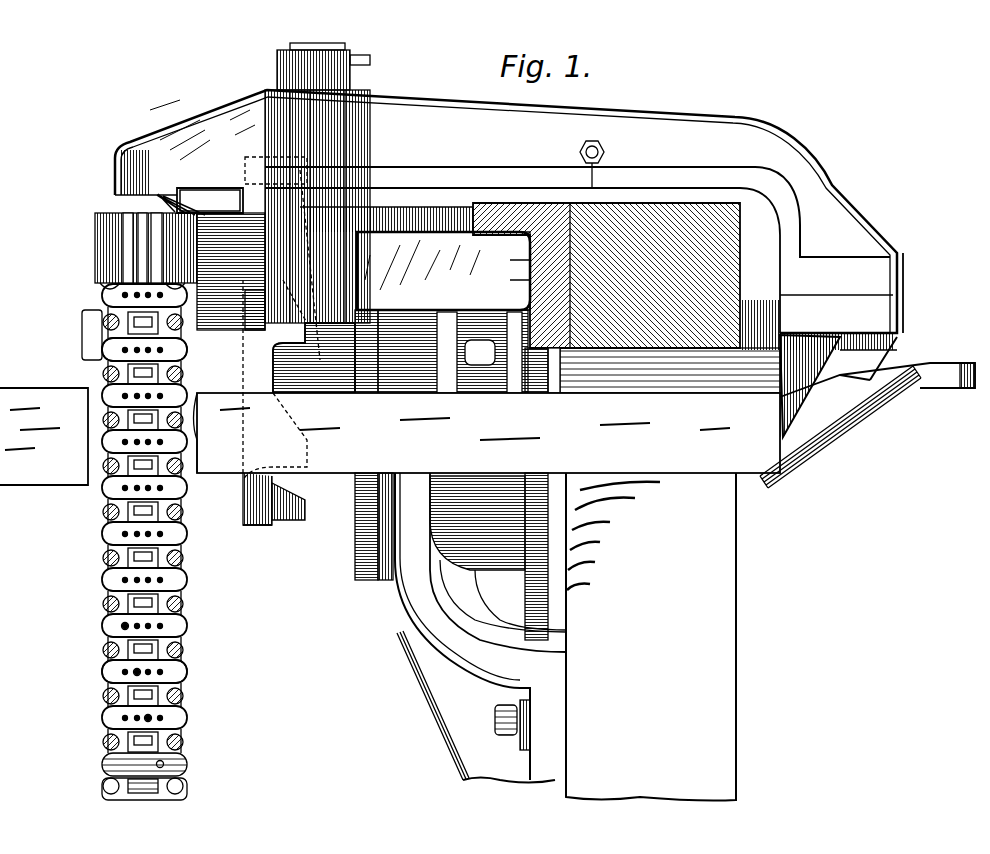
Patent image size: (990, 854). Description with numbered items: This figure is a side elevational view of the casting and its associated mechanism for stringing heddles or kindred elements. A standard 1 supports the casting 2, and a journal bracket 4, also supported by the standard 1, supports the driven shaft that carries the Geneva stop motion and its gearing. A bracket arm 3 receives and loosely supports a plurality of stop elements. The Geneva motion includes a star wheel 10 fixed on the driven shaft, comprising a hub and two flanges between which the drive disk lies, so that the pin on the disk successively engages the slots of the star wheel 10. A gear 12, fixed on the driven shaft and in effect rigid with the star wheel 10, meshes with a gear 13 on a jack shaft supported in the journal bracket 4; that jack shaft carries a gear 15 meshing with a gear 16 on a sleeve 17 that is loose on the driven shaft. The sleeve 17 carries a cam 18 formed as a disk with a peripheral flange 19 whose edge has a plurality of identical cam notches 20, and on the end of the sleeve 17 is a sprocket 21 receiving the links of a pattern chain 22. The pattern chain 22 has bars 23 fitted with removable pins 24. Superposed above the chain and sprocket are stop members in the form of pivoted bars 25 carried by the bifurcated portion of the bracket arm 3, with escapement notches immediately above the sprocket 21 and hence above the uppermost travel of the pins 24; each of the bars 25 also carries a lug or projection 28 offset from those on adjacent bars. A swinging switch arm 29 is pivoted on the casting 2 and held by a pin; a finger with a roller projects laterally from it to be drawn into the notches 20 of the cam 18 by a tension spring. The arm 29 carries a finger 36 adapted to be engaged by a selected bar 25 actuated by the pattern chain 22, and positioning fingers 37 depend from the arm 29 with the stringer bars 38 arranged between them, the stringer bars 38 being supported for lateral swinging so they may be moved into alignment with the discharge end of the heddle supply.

The standard 1 is at (718, 620).
The casting 2 is at (728, 272).
The bracket arm 3 is at (228, 212).
The journal bracket 4 is at (425, 690).
The star wheel 10 is at (512, 382).
The gear 12 is at (540, 394).
The gear 13 is at (532, 612).
The gear 15 is at (365, 600).
The gear 16 is at (368, 393).
The sleeve 17 is at (340, 375).
The cam 18 is at (265, 525).
The peripheral flange 19 is at (290, 522).
The cam notches 20 is at (300, 510).
The sprocket 21 is at (120, 330).
The pattern chain 22 is at (170, 602).
The bars 23 is at (160, 675).
The removable pins 24 is at (128, 628).
The pivoted bars 25 is at (140, 247).
The lugs or projections 28 is at (157, 195).
The swinging switch arm 29 is at (682, 116).
The finger 36 is at (218, 110).
The positioning fingers 37 is at (868, 366).
The stringer bars 38 is at (848, 438).